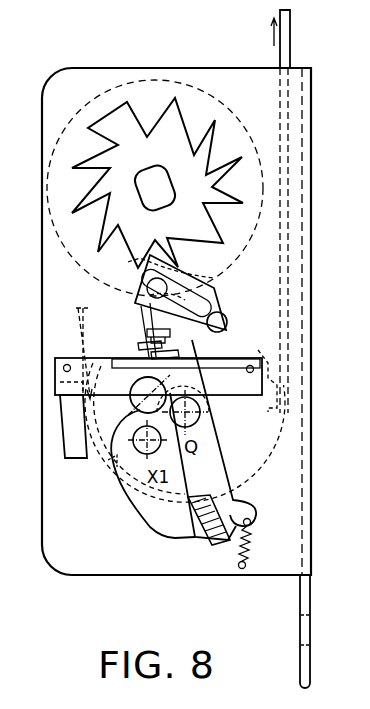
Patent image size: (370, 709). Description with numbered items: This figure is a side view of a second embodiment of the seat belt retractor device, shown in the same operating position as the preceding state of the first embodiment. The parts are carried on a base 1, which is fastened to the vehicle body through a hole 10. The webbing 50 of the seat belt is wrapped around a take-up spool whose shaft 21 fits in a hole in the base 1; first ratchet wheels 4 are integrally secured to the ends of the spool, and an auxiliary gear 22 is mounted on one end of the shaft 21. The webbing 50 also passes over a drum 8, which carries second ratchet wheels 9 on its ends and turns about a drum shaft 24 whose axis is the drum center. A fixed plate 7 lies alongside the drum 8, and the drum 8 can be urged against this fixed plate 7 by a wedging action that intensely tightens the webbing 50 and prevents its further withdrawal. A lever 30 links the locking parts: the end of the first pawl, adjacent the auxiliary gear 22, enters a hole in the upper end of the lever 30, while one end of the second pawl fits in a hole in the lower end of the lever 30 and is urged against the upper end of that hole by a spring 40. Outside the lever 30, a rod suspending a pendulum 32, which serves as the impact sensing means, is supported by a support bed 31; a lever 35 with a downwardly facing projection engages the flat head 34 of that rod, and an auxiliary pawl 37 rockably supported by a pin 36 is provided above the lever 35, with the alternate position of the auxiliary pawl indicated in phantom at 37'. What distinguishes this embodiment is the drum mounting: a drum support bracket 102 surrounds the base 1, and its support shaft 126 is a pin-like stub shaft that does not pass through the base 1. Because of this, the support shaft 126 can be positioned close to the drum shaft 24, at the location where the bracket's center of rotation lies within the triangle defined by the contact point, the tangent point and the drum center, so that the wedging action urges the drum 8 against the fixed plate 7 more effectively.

The base 1 is at (100, 70).
The webbing 50 is at (290, 35).
The first ratchet wheels 4 is at (236, 104).
The auxiliary gear 22 is at (157, 183).
The shaft of the take-up spool 21 is at (140, 197).
The auxiliary pawl 37 is at (194, 306).
The pawl lever alternate position 37' is at (146, 279).
The pin 36 is at (226, 319).
The lever 35 is at (147, 331).
The flat head 34 is at (138, 345).
The support bed 31 is at (226, 360).
The drum 8 is at (270, 364).
The second ratchet wheels 9 is at (278, 425).
The pendulum 32 is at (130, 404).
The drum shaft 24 is at (207, 408).
The lever 30 is at (208, 463).
The fixed plate 7 is at (60, 432).
The support shaft 126 is at (118, 455).
The drum support bracket 102 is at (152, 527).
The spring 40 is at (192, 540).
The hole 10 is at (303, 620).